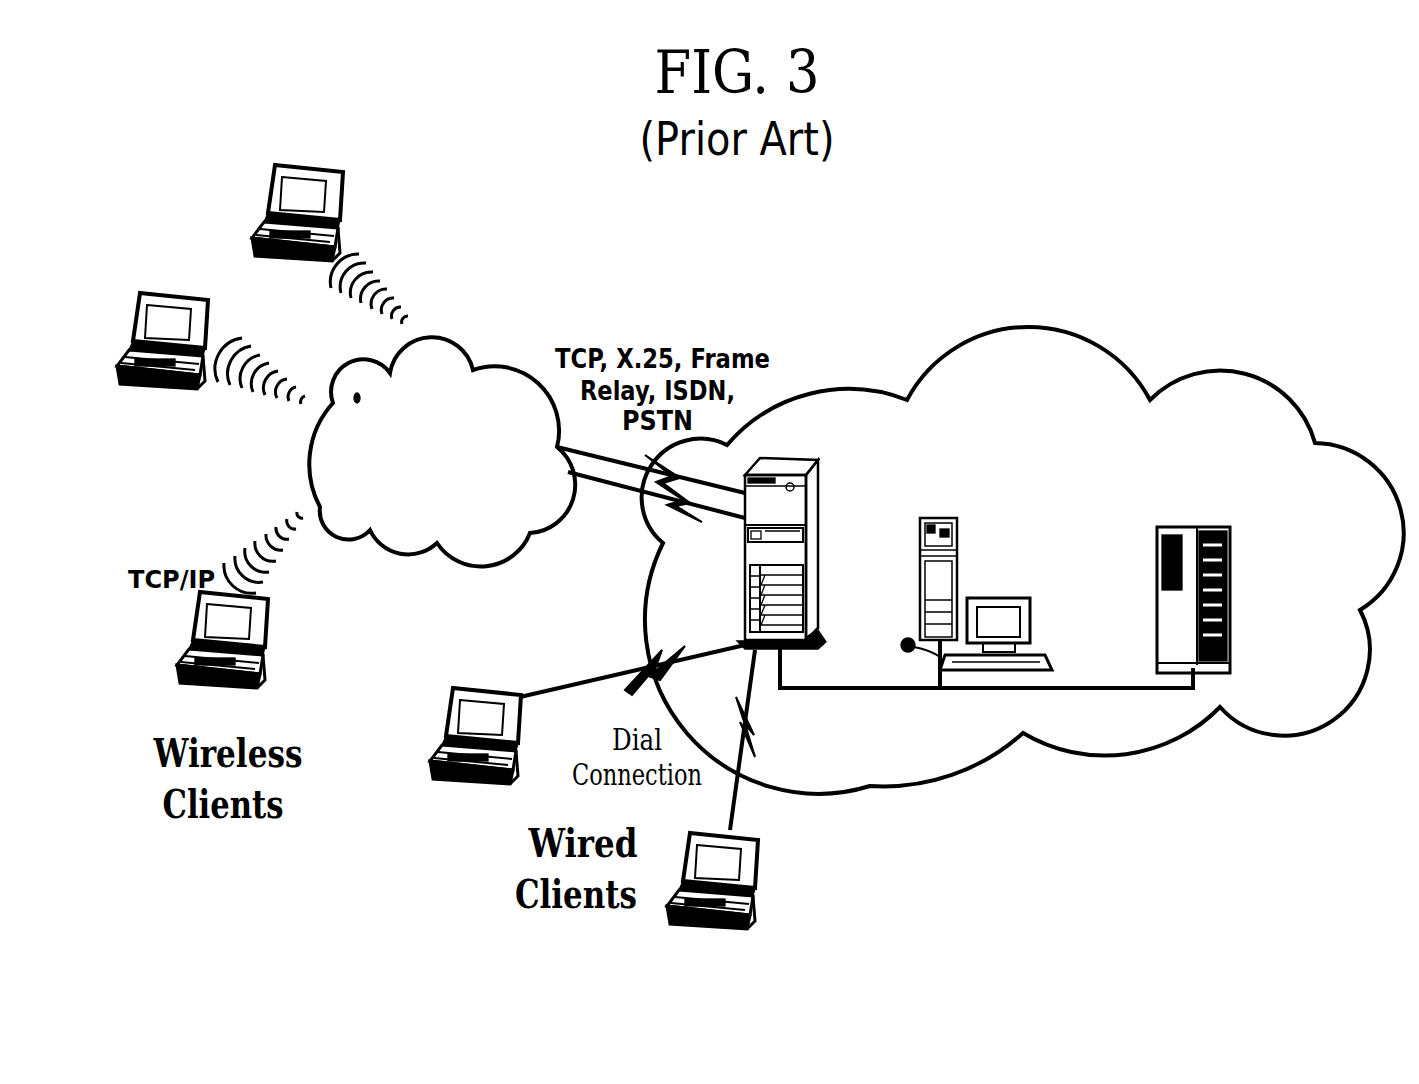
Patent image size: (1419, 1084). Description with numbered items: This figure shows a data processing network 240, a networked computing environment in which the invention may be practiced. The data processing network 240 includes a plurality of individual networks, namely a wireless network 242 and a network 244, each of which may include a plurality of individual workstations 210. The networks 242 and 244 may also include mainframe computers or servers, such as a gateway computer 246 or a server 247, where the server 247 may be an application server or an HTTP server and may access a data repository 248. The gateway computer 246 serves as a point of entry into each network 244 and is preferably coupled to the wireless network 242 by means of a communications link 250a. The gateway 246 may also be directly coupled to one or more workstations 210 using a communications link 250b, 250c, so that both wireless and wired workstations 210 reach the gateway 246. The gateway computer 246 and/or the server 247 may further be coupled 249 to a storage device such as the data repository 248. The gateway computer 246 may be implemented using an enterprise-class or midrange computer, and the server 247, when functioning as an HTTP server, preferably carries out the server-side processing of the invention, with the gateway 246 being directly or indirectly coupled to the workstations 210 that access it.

The workstations 210 is at (462, 540).
The data processing network 240 is at (1188, 941).
The wireless network 242 is at (442, 451).
The network 244 is at (1023, 553).
The gateway computer 246 is at (825, 527).
The server 247 is at (976, 574).
The data repository 248 is at (1227, 598).
The coupling 249 is at (986, 685).
The communications link 250a is at (651, 491).
The communications link 250b is at (632, 668).
The communications link 250c is at (780, 740).